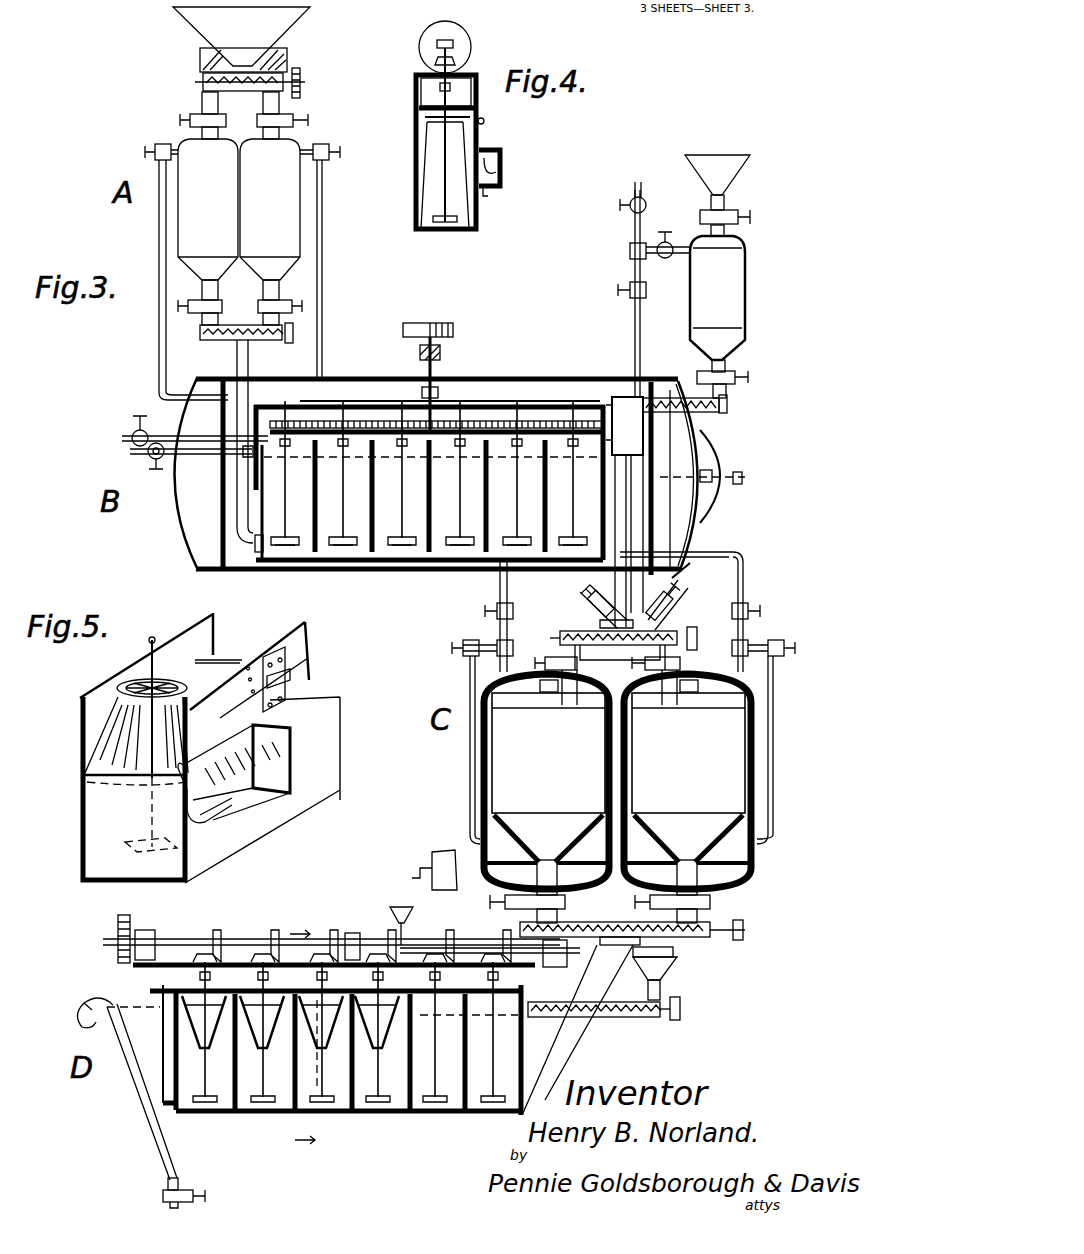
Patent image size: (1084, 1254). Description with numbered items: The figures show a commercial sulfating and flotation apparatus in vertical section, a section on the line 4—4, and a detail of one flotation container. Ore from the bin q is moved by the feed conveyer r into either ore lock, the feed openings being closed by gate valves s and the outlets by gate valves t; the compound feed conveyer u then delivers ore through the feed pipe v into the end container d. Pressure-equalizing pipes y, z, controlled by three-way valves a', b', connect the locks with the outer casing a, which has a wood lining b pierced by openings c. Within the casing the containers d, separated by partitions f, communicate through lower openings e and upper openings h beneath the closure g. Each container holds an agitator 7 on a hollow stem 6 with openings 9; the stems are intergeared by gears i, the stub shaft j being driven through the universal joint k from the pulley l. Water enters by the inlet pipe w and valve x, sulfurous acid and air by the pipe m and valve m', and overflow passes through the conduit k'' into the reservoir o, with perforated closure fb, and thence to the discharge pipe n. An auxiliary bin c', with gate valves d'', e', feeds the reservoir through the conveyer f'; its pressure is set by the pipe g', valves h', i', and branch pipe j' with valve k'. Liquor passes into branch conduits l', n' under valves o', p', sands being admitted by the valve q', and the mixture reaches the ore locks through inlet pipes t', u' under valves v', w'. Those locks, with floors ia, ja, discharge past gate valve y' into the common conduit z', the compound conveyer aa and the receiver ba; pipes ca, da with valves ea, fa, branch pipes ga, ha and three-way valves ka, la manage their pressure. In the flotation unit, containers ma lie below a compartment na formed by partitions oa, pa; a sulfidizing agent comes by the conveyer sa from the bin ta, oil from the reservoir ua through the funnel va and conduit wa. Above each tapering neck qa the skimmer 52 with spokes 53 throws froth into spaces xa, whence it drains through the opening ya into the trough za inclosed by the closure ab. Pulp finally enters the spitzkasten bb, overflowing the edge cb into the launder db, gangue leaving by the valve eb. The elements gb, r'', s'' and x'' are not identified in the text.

In FIG. 4, the skimmer 52 is at (437, 118).
In FIG. 3, the skimmer 52 is at (355, 940).
In FIG. 5, the skimmer 52 is at (118, 690).
In FIG. 5, the radial spokes 53 is at (180, 687).
In FIG. 4, the opening ya is at (500, 160).
In FIG. 4, the box-like closure ab is at (500, 178).
In FIG. 5, the box-like closure ab is at (320, 735).
In FIG. 4, the trough or launder za is at (490, 190).
In FIG. 5, the trough or launder za is at (228, 808).
In FIG. 3, the bin q is at (231, 36).
In FIG. 3, the feed conveyer r is at (250, 85).
In FIG. 3, the gate valves s is at (247, 102).
In FIG. 3, the three-way valve a' is at (153, 133).
In FIG. 3, the three-way valve b' is at (330, 133).
In FIG. 3, the pressure-equalizing pipe y is at (138, 276).
In FIG. 3, the pressure-equalizing pipe z is at (336, 268).
In FIG. 3, the gate valves t is at (261, 289).
In FIG. 3, the compound feed conveyer u is at (239, 344).
In FIG. 3, the feed pipe v is at (204, 446).
In FIG. 3, the pipe m is at (173, 398).
In FIG. 3, the valve m' is at (174, 425).
In FIG. 3, the valve x is at (178, 457).
In FIG. 3, the inlet pipe w is at (156, 467).
In FIG. 3, the outer casing a is at (413, 473).
In FIG. 3, the openings c is at (191, 474).
In FIG. 3, the protective lining b is at (570, 458).
In FIG. 3, the reservoir o is at (714, 475).
In FIG. 3, the discharge pipe n is at (708, 476).
In FIG. 3, the conduit k'' is at (683, 534).
In FIG. 3, the openings e is at (384, 775).
In FIG. 3, the meshing gears i is at (436, 386).
In FIG. 3, the openings h is at (436, 386).
In FIG. 3, the stub shaft j is at (450, 372).
In FIG. 3, the containers d is at (442, 496).
In FIG. 3, the dividing partitions f is at (429, 469).
In FIG. 3, the openings 9 is at (192, 976).
In FIG. 3, the hollow rotatable stem 6 is at (396, 792).
In FIG. 3, the agitator 7 is at (208, 1096).
In FIG. 3, the driving pulley l is at (428, 356).
In FIG. 3, the universal joint k is at (443, 368).
In FIG. 3, the closure g is at (615, 399).
In FIG. 3, the connection gb is at (605, 405).
In FIG. 3, the perforated closure fb is at (625, 395).
In FIG. 3, the pipe g' is at (614, 293).
In FIG. 3, the valve i' is at (629, 185).
In FIG. 3, the valve h' is at (623, 269).
In FIG. 3, the branch pipe j' is at (660, 226).
In FIG. 3, the valve k' is at (660, 268).
In FIG. 3, the auxiliary bin c' is at (737, 298).
In FIG. 3, the gate valve d'' is at (726, 195).
In FIG. 3, the gate valve e' is at (736, 358).
In FIG. 3, the feed conveyer f' is at (710, 393).
In FIG. 3, the branch conduit n' is at (603, 600).
In FIG. 3, the valve p' is at (586, 604).
In FIG. 3, the valve o' is at (681, 605).
In FIG. 3, the branch conduit l' is at (691, 576).
In FIG. 3, the valve q' is at (618, 642).
In FIG. 3, the valve r'' is at (571, 677).
In FIG. 3, the valve s'' is at (646, 677).
In FIG. 3, the bin floor ia is at (512, 845).
In FIG. 3, the bin floor ja is at (666, 845).
In FIG. 3, the valve v' is at (539, 703).
In FIG. 3, the inlet pipe t' is at (568, 714).
In FIG. 3, the inlet pipe u' is at (668, 714).
In FIG. 3, the valve w' is at (706, 704).
In FIG. 3, the valve x'' is at (548, 905).
In FIG. 3, the gate valve y' is at (708, 900).
In FIG. 3, the connecting pipe ca is at (499, 622).
In FIG. 3, the valve ea is at (497, 606).
In FIG. 3, the three-way valve ka is at (462, 650).
In FIG. 3, the branch pipe ga is at (469, 690).
In FIG. 3, the valve fa is at (744, 590).
In FIG. 3, the connecting pipe da is at (750, 616).
In FIG. 3, the three-way valve la is at (786, 650).
In FIG. 3, the branch pipe ha is at (775, 700).
In FIG. 3, the reservoir ua is at (443, 855).
In FIG. 3, the conduit wa is at (418, 948).
In FIG. 3, the funnel va is at (394, 911).
In FIG. 3, the common conduit z' is at (632, 944).
In FIG. 3, the bin or receiver ba is at (605, 947).
In FIG. 3, the compound conveyer aa is at (665, 957).
In FIG. 3, the bin or receptacle ta is at (660, 975).
In FIG. 3, the conveyer sa is at (640, 1017).
In FIG. 3, the compartment na is at (165, 960).
In FIG. 3, the partition oa is at (220, 960).
In FIG. 3, the perforated partition pa is at (222, 985).
In FIG. 3, the tapering neck portion qa is at (298, 990).
In FIG. 5, the tapering neck portion qa is at (118, 740).
In FIG. 3, the spaces xa is at (165, 998).
In FIG. 5, the spaces xa is at (84, 728).
In FIG. 3, the containers ma is at (323, 1052).
In FIG. 3, the container 4 is at (350, 1039).
In FIG. 3, the spitzkasten bb is at (135, 1072).
In FIG. 3, the upper discharge edge cb is at (110, 1005).
In FIG. 3, the launder or trough db is at (83, 1027).
In FIG. 3, the valve eb is at (168, 1188).